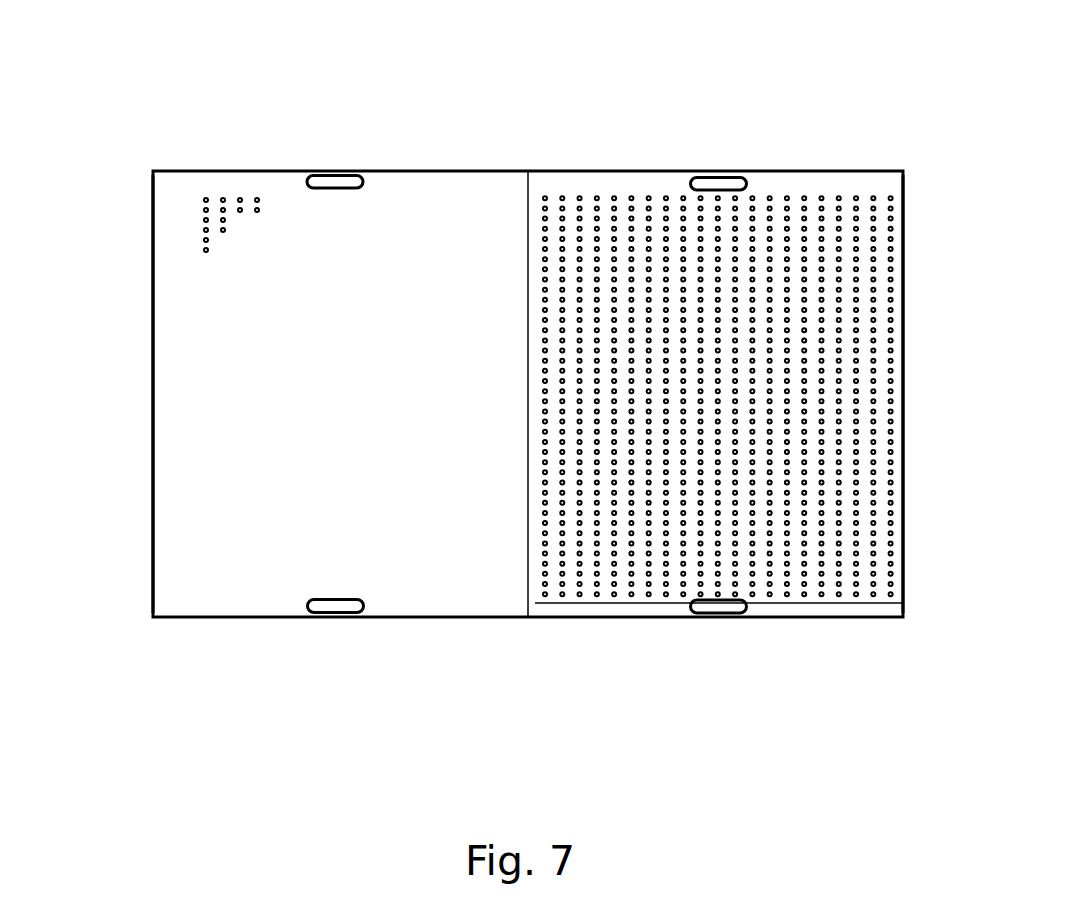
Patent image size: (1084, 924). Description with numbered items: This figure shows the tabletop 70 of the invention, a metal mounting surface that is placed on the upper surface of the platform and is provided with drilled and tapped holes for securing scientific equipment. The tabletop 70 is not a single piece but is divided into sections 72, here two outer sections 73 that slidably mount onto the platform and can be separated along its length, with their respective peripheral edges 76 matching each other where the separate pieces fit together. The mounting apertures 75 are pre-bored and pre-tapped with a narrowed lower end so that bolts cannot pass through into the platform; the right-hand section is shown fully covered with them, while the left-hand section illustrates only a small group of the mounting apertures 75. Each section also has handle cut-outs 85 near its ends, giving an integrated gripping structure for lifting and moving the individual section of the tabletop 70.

The tabletop 70 is at (525, 680).
The sections 72 is at (487, 100).
The outer sections 73 is at (903, 518).
The mounting aperture 75 is at (250, 193).
The peripheral edges 76 is at (450, 267).
The handle cut-outs 85 is at (340, 175).